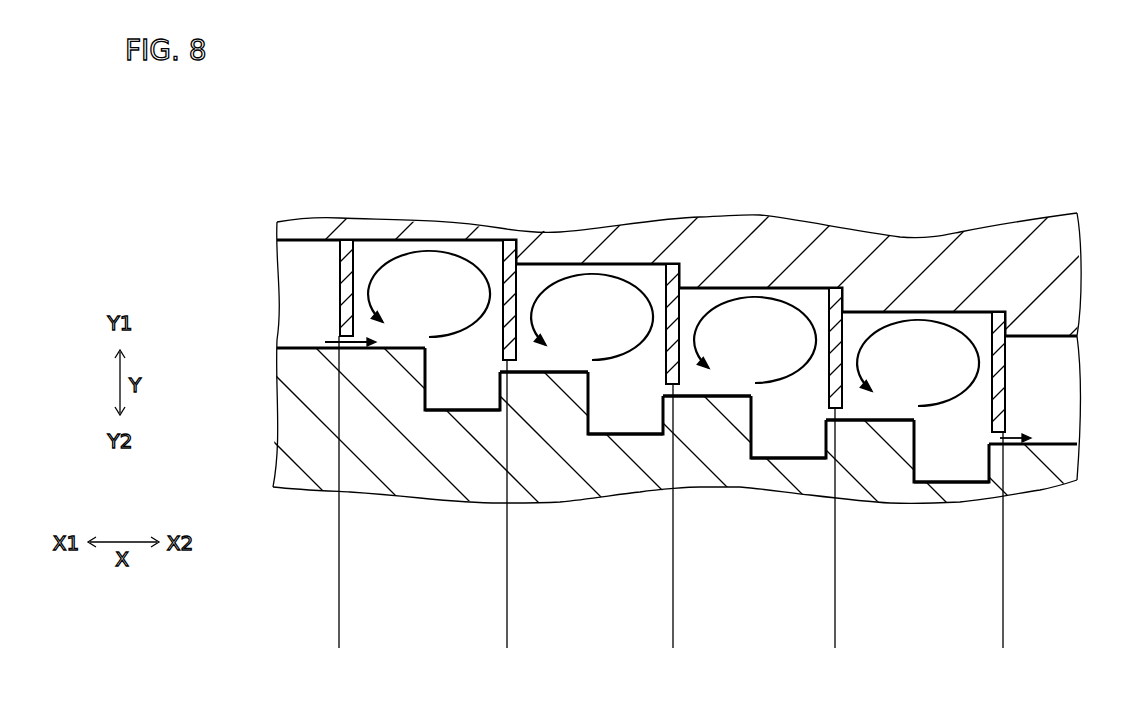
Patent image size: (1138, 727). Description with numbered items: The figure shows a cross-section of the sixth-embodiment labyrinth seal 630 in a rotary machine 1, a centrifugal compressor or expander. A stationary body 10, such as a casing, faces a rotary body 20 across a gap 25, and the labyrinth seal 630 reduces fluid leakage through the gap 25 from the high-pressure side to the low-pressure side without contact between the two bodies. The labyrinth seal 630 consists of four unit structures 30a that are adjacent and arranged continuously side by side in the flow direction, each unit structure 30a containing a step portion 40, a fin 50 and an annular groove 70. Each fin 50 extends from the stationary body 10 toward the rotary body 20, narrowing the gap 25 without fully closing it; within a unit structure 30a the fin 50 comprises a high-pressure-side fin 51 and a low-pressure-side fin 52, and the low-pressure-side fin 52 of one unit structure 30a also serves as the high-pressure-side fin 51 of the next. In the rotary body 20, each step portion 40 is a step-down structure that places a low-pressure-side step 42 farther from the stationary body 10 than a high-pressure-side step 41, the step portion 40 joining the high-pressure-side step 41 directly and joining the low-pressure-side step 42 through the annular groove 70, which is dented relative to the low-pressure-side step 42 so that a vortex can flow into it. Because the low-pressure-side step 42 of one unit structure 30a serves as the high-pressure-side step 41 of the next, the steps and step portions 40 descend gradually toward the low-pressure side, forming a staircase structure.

The rotary machine 1 is at (236, 210).
The stationary body 10 is at (290, 232).
The rotary body 20 is at (292, 487).
The gap 25 is at (296, 268).
The labyrinth seal 630 is at (296, 322).
The fin 50 is at (673, 288).
The high-pressure-side fin 51 is at (345, 240).
The low-pressure-side fin 52 is at (1000, 312).
The step portion 40 is at (430, 362).
The high-pressure-side step 41 is at (392, 346).
The low-pressure-side step 42 is at (1058, 444).
The annular groove 70 is at (483, 409).
The unit structure 30a is at (1003, 648).